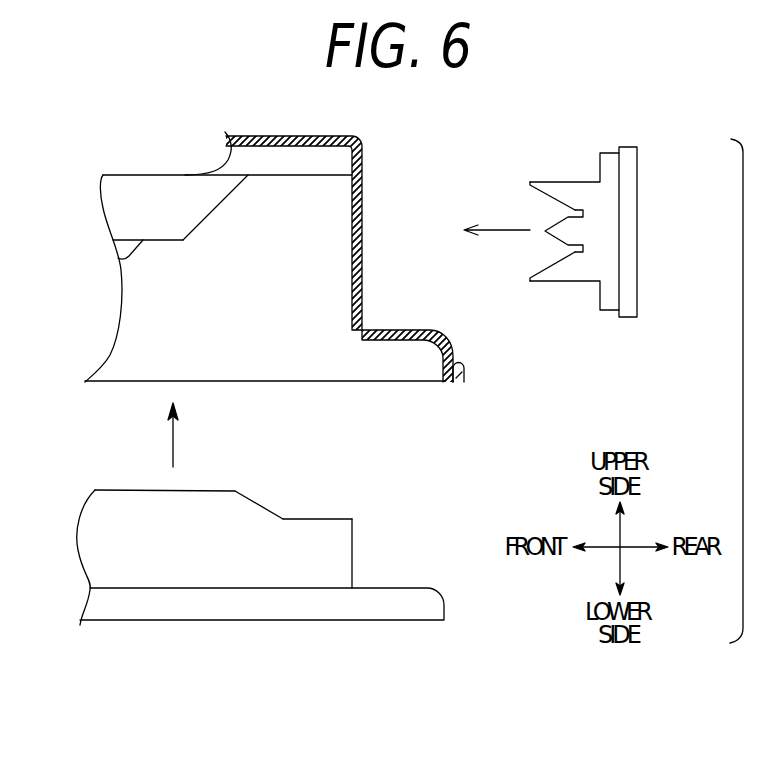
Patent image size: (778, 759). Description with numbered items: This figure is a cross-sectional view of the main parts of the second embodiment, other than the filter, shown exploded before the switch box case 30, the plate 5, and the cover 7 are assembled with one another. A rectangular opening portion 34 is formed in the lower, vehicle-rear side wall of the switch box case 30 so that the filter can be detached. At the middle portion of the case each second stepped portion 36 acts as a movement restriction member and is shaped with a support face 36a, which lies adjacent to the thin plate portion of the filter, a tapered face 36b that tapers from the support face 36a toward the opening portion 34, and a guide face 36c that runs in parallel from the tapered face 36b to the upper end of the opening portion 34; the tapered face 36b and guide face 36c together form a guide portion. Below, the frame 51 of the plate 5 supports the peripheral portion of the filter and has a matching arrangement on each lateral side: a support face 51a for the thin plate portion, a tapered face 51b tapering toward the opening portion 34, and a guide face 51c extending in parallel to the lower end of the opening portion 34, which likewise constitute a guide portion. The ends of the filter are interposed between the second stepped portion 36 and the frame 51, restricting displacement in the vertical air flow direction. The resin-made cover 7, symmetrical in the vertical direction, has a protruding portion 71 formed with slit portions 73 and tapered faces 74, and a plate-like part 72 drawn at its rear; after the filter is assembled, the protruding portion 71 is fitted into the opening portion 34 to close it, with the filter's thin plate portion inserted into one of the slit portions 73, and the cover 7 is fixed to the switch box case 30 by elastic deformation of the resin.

The plate 5 is at (260, 630).
The cover 7 is at (590, 237).
The switch box case 30 is at (100, 279).
The opening portion 34 is at (358, 190).
The second stepped portion 36 is at (161, 236).
The support face 36a is at (113, 258).
The tapered face 36b is at (208, 212).
The guide face 36c is at (300, 178).
The frame 51 is at (231, 474).
The support face 51a is at (137, 490).
The tapered face 51b is at (265, 505).
The guide face 51c is at (317, 520).
The protruding portion 71 is at (602, 197).
The flange plate 72 is at (628, 180).
The slit portion 73 is at (577, 208).
The tapered face 74 is at (530, 187).